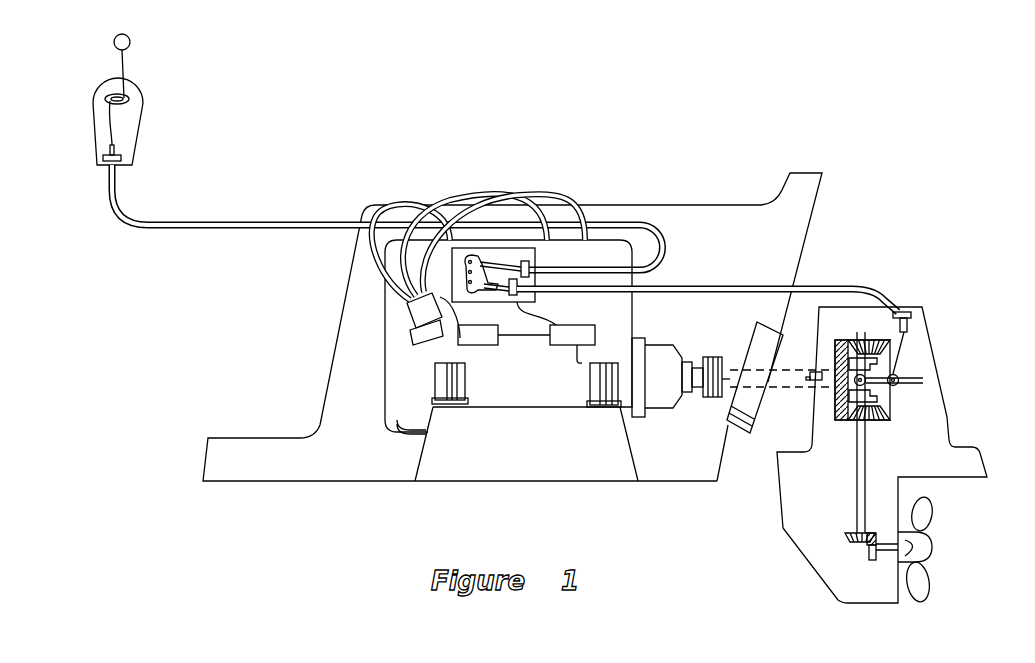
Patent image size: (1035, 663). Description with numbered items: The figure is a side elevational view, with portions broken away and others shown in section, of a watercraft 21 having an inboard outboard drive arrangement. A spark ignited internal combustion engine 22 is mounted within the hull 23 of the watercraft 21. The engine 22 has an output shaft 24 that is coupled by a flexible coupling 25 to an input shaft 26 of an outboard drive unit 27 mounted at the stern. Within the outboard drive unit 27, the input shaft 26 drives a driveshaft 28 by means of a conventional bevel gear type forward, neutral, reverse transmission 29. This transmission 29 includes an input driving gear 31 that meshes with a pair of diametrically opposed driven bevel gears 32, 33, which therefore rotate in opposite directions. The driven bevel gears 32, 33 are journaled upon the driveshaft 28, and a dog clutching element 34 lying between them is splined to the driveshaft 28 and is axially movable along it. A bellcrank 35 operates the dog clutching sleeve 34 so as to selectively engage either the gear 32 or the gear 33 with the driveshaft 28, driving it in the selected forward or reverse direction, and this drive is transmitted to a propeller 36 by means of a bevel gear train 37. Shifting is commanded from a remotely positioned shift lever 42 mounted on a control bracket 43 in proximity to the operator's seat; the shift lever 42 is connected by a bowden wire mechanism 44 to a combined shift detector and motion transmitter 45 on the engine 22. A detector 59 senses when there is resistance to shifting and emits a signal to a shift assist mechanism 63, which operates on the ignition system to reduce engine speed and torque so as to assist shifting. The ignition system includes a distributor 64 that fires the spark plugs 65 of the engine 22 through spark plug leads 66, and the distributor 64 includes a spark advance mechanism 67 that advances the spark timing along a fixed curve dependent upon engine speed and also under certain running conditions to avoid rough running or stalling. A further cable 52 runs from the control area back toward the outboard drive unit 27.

The watercraft 21 is at (850, 181).
The spark ignited internal combustion engine 22 is at (395, 385).
The hull 23 is at (348, 470).
The output shaft 24 is at (700, 362).
The flexible coupling 25 is at (708, 415).
The input shaft 26 is at (735, 432).
The outboard drive unit 27 is at (953, 412).
The driveshaft 28 is at (857, 478).
The forward, neutral, reverse transmission 29 is at (893, 397).
The input driving gear 31 is at (833, 352).
The driven bevel gear 32 is at (878, 335).
The driven bevel gear 33 is at (850, 418).
The dog clutching element 34 is at (900, 376).
The bellcrank 35 is at (877, 363).
The propeller 36 is at (927, 512).
The bevel gear train 37 is at (870, 548).
The shift lever 42 is at (130, 40).
The control bracket 43 is at (97, 133).
The bowden wire mechanism 44 is at (217, 222).
The combined shift detector and motion transmitter 45 is at (558, 251).
The shift control cable 52 is at (868, 284).
The detector 59 is at (498, 293).
The shift assist mechanism 63 is at (581, 335).
The distributor 64 is at (393, 330).
The spark plugs 65 is at (583, 237).
The spark plug leads 66 is at (368, 272).
The spark advance mechanism 67 is at (473, 345).